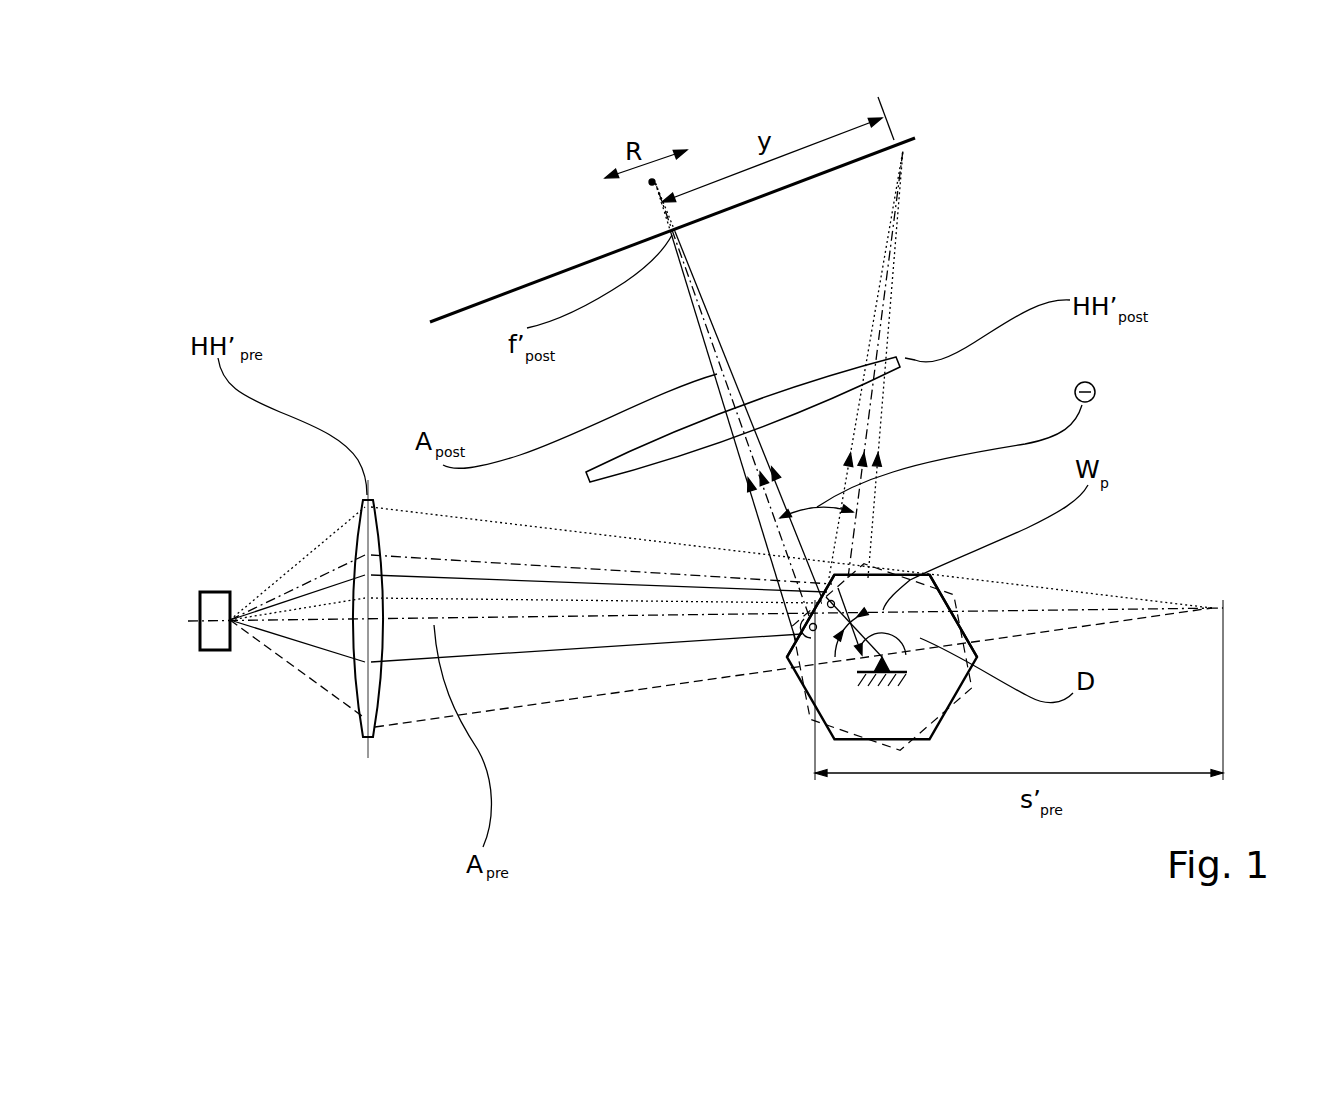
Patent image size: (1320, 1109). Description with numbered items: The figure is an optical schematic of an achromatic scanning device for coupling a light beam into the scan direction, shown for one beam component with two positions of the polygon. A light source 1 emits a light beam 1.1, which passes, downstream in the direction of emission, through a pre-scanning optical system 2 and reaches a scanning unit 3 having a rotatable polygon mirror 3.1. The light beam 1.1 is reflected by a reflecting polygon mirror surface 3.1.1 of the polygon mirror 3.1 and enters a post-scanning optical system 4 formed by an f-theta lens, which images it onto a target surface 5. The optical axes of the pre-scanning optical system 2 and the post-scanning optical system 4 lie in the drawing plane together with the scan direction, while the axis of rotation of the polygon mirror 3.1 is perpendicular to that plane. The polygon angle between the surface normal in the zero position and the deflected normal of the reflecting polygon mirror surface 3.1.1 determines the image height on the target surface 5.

The light source 1 is at (223, 647).
The light beam 1.1 is at (285, 548).
The pre-scanning optical system 2 is at (362, 682).
The scanning unit 3 is at (925, 753).
The polygon mirror 3.1 is at (950, 612).
The reflecting polygon mirror surface 3.1.1 is at (787, 647).
The post-scanning optical system 4 is at (897, 360).
The target surface 5 is at (906, 151).